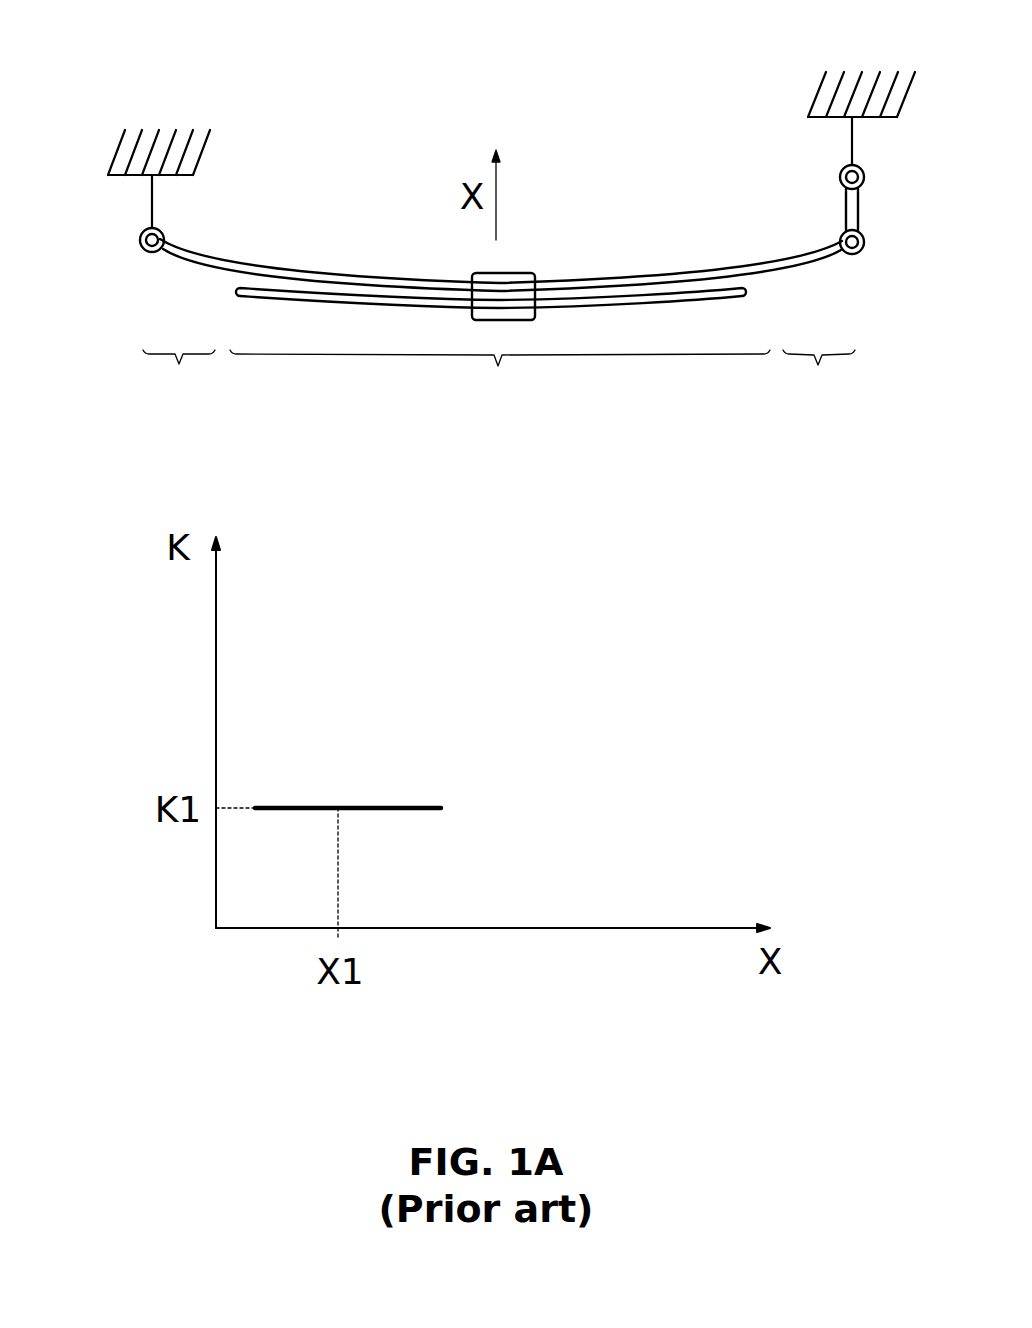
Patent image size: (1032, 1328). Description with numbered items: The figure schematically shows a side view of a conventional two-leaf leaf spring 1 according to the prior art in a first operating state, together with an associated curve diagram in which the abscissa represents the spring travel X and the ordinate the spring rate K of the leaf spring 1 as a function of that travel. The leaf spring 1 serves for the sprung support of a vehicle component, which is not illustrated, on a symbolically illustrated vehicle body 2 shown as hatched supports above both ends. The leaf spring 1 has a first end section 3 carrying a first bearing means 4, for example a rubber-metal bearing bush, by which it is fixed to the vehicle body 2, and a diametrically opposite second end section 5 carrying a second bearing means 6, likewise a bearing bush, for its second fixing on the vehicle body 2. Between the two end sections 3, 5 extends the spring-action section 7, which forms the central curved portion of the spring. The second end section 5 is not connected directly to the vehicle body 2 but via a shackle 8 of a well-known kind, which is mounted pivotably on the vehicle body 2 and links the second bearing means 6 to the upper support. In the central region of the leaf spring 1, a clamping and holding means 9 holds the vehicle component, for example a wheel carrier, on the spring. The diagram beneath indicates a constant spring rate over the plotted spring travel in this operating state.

The leaf spring 1 is at (337, 153).
The vehicle body 2 is at (511, 123).
The first end section 3 is at (179, 382).
The first bearing means 4 is at (141, 250).
The second end section 5 is at (819, 382).
The second bearing means 6 is at (853, 256).
The spring-action section 7 is at (500, 383).
The shackle 8 is at (840, 207).
The clamping and holding means 9 is at (520, 273).